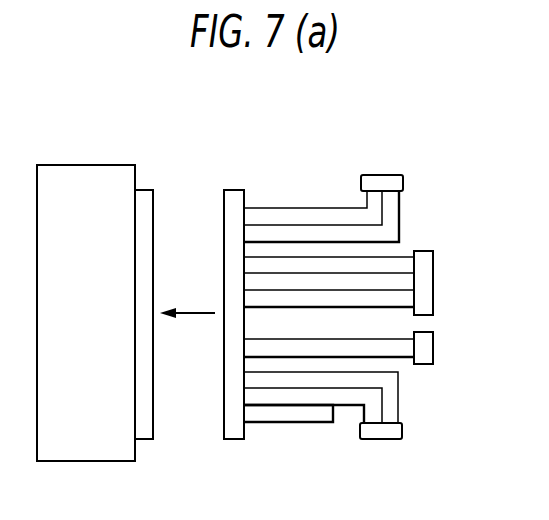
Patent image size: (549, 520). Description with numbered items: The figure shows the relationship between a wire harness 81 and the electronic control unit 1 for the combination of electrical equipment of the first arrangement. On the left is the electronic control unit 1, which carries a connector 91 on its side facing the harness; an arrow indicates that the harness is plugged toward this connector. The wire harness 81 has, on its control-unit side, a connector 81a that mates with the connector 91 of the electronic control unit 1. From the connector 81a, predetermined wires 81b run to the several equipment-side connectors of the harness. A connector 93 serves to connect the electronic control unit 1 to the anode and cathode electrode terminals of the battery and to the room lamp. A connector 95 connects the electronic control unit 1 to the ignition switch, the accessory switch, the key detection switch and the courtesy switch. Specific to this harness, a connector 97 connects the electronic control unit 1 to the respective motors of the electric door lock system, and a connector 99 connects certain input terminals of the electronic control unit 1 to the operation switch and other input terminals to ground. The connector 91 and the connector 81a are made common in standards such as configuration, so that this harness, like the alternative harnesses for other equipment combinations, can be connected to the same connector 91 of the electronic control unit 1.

The electronic control unit 1 is at (78, 155).
The connector 91 is at (147, 188).
The wire harness 81 is at (291, 175).
The connector 81a is at (233, 441).
The wires 81b is at (301, 434).
The connector 93 is at (381, 174).
The connector 95 is at (434, 283).
The connector 97 is at (434, 348).
The connector 99 is at (403, 429).